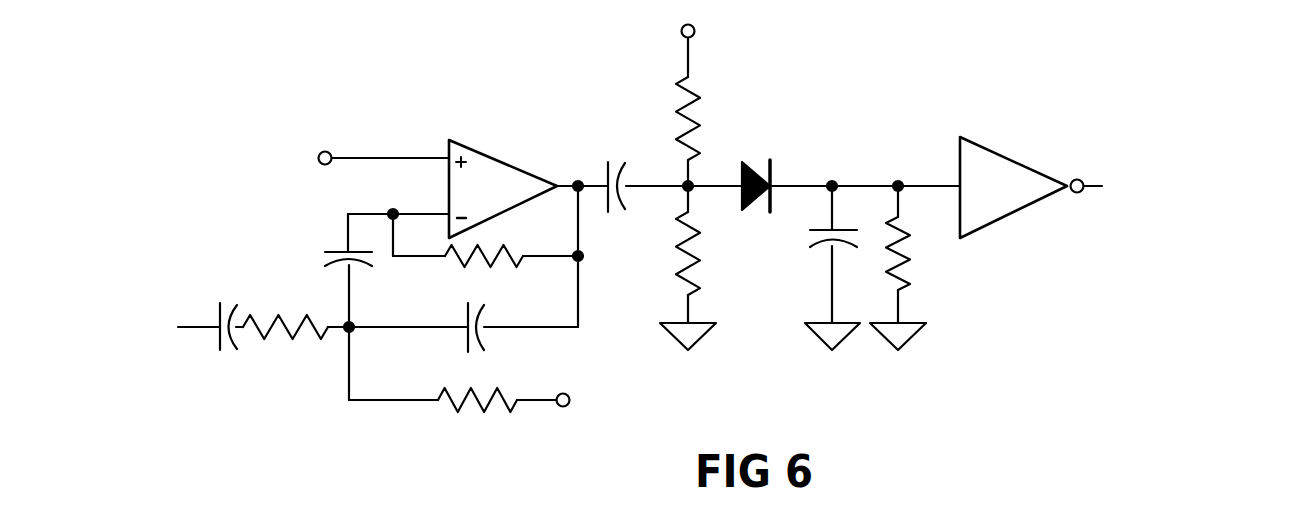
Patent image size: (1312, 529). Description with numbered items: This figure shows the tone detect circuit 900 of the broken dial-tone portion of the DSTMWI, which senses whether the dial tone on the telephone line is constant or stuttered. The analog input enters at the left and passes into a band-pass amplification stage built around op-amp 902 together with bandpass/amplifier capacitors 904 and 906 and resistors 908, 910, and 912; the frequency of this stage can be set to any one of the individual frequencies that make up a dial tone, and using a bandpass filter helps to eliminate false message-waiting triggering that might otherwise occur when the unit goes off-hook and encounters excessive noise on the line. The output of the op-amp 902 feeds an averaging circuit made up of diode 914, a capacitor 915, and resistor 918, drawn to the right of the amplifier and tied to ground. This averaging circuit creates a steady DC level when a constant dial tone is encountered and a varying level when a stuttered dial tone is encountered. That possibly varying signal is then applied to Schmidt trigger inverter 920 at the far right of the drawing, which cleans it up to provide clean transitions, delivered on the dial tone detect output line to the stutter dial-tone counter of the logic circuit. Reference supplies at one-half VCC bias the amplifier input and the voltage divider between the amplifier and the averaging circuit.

The tone detect circuit 900 is at (899, 70).
The op-amp 902 is at (503, 175).
The bandpass/amplifier capacitor 904 is at (329, 240).
The bandpass/amplifier capacitor 906 is at (507, 337).
The resistor 908 is at (499, 246).
The resistor 910 is at (494, 418).
The resistor 912 is at (274, 317).
The diode 914 is at (755, 161).
The capacitor 915 is at (806, 227).
The resistor 918 is at (927, 238).
The Schmidt trigger inverter 920 is at (1022, 175).